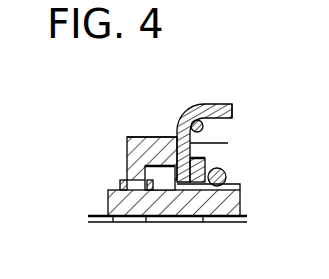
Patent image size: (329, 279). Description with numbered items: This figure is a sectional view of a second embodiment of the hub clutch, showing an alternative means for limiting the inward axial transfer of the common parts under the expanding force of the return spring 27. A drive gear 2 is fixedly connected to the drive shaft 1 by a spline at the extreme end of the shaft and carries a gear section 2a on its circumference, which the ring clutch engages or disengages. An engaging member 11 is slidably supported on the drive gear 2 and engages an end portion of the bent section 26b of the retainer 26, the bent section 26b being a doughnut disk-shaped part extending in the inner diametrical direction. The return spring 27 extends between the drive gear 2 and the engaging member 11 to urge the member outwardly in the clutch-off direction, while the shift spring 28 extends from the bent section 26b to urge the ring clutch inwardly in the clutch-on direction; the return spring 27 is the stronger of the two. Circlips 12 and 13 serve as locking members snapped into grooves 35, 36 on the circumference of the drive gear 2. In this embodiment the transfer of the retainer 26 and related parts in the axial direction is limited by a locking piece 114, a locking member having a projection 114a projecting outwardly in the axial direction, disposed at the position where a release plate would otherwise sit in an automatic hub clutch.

The drive shaft 1 is at (92, 226).
The drive gear 2 is at (112, 202).
The gear section 2a is at (233, 187).
The engaging member 11 is at (203, 217).
The circlip 12 is at (118, 182).
The circlip 13 is at (173, 216).
The retainer 26 is at (200, 100).
The bent section 26b is at (232, 138).
The return spring 27 is at (227, 172).
The shift spring 28 is at (233, 120).
The groove 35 is at (113, 222).
The groove 36 is at (146, 216).
The locking piece 114 is at (128, 143).
The projection 114a is at (143, 137).